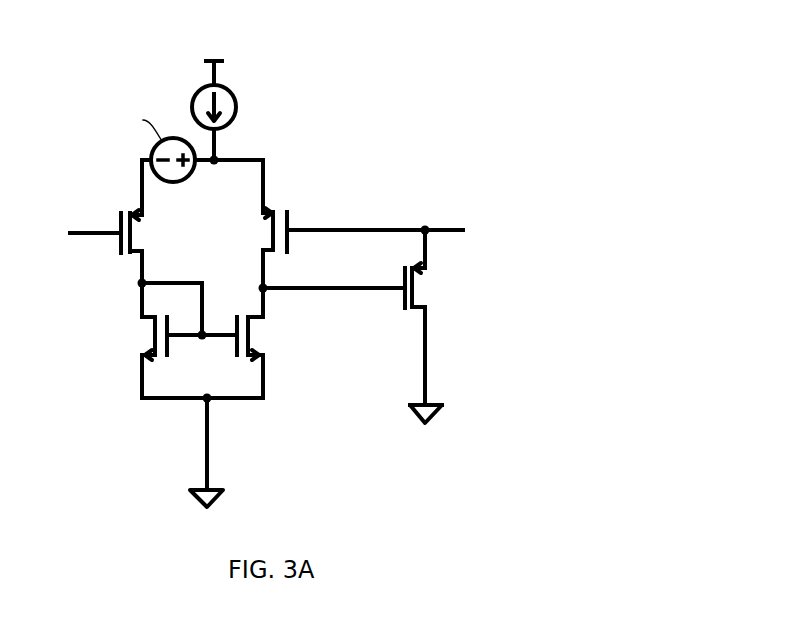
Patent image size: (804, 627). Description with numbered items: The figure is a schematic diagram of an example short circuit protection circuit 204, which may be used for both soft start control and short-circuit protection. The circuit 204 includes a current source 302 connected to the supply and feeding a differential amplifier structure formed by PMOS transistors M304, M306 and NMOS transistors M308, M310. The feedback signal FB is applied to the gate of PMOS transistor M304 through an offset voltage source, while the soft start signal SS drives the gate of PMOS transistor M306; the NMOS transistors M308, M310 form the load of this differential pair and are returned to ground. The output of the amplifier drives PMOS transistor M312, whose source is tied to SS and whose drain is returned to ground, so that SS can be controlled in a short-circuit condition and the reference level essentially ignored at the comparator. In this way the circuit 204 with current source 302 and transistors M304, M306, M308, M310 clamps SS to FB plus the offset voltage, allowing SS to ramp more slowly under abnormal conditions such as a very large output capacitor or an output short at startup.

The short circuit protection circuit 204 is at (511, 34).
The current source 302 is at (236, 106).
The PMOS transistor M304 is at (132, 238).
The PMOS transistor M306 is at (290, 217).
The NMOS transistor M308 is at (152, 327).
The NMOS transistor M310 is at (252, 338).
The PMOS transistor M312 is at (418, 296).